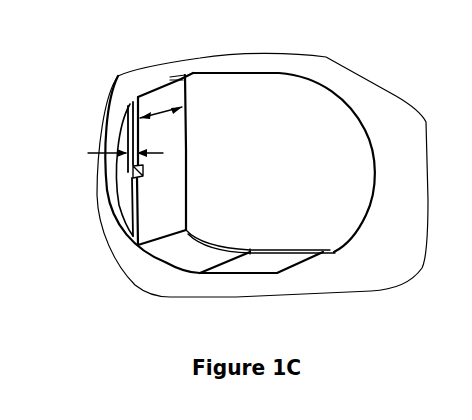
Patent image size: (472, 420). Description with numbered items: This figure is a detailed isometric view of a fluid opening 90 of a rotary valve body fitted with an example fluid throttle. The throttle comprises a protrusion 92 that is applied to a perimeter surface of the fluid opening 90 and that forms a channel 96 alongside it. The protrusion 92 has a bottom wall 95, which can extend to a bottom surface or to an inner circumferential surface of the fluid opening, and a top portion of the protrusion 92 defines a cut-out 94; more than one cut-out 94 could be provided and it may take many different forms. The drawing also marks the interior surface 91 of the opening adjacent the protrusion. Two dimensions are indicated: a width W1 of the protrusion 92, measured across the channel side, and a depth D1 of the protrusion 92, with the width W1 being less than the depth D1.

The fluid opening 90 is at (221, 73).
The inner bottom surface 91 is at (173, 257).
The protrusion 92 is at (163, 100).
The cut-out 94 is at (140, 178).
The bottom wall 95 is at (187, 138).
The channel 96 is at (122, 188).
The depth D1 is at (140, 118).
The width W1 is at (108, 155).